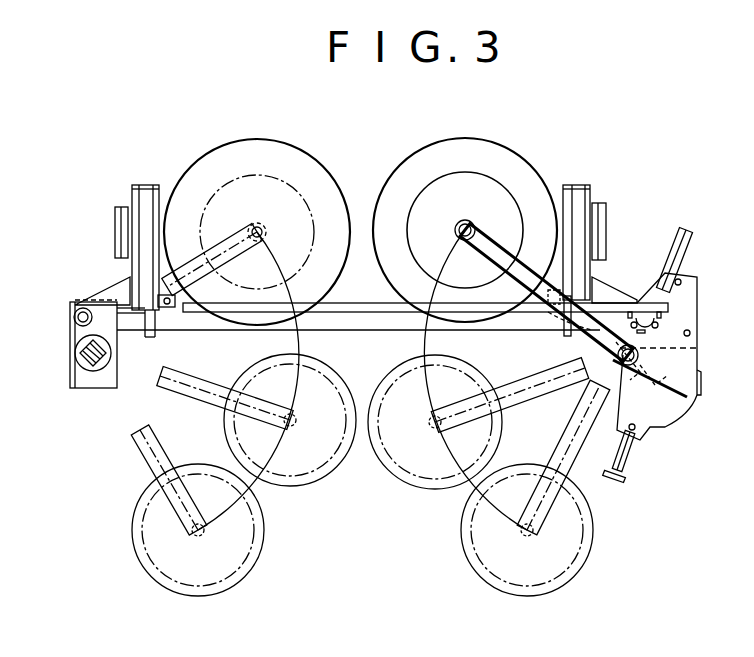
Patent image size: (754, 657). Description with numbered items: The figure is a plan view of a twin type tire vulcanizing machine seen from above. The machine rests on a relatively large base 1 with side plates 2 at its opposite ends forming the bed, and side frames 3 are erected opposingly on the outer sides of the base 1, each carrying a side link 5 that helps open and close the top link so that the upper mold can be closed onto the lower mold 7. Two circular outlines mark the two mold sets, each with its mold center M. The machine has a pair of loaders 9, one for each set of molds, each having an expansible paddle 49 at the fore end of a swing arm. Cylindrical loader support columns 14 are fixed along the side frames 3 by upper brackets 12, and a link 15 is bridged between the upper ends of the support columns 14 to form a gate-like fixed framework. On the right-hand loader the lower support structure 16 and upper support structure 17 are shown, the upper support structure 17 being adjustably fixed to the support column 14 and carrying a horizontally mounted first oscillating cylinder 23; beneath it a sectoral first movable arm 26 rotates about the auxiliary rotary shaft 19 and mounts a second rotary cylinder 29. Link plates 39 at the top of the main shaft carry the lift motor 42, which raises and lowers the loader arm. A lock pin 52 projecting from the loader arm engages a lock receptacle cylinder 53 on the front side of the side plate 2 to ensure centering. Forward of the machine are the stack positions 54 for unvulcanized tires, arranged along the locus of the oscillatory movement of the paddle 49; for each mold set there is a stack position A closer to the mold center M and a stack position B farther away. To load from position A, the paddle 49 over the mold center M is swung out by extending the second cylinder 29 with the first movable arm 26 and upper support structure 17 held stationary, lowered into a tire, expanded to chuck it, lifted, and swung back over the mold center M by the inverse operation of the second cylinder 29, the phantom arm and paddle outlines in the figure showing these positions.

The base 1 is at (345, 332).
The side plates 2 is at (156, 336).
The side frames 3 is at (131, 196).
The side link 5 is at (114, 243).
The lower mold 7 is at (360, 278).
The loader 9 is at (95, 392).
The upper bracket 12 is at (125, 292).
The loader support column 14 is at (74, 315).
The link 15 is at (490, 332).
The lower support structure 16 is at (117, 385).
The upper support structure 17 is at (699, 295).
The auxiliary rotary shaft 19 is at (578, 392).
The first oscillating cylinder 23 is at (694, 240).
The first movable arm 26 is at (683, 408).
The second rotary cylinder 29 is at (626, 478).
The link plates 39 is at (636, 378).
The lift motor 42 is at (618, 349).
The paddle 49 is at (409, 258).
The lock pin 52 is at (545, 334).
The lock receptacle cylinder 53 is at (552, 288).
The stack positions 54 is at (272, 490).
The mold center M is at (262, 228).
The stack position A is at (296, 420).
The stack position B is at (204, 530).